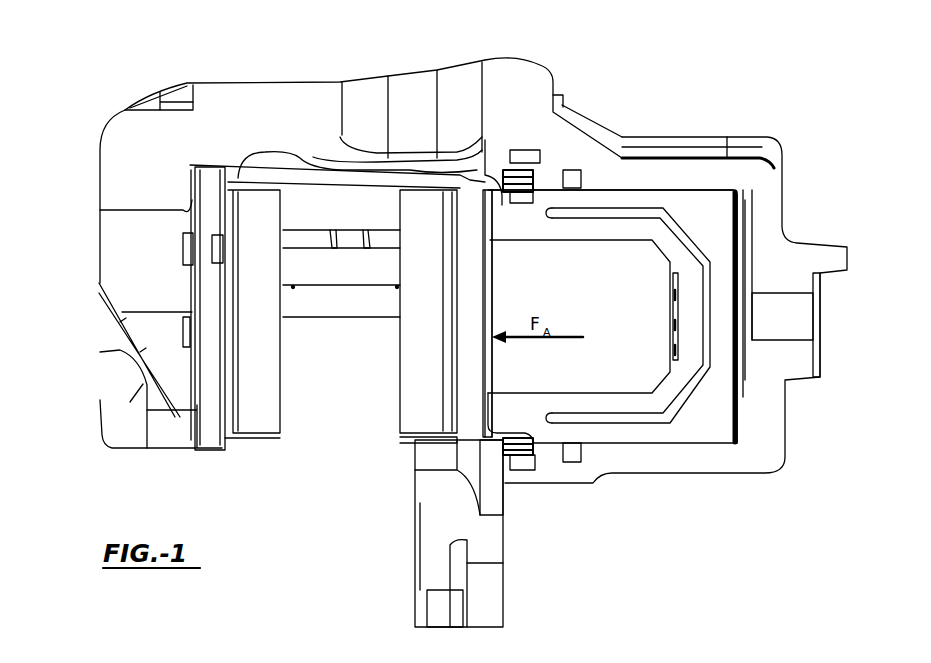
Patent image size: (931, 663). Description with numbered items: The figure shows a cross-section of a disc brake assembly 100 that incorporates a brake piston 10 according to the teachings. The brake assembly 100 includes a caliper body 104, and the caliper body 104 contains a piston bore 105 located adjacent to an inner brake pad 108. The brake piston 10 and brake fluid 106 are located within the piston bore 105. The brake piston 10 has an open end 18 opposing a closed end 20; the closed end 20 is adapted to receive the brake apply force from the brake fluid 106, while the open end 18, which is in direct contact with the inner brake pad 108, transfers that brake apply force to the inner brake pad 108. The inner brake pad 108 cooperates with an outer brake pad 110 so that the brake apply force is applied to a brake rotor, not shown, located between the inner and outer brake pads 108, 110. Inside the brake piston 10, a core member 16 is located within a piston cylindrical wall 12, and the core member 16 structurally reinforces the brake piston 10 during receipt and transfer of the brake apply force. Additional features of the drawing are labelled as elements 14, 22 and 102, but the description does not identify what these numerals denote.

The brake piston 10 is at (688, 436).
The piston cylindrical wall 12 is at (643, 433).
The piston 14 is at (597, 353).
The core member 16 is at (697, 377).
The open end 18 is at (478, 225).
The closed end 20 is at (723, 322).
The caliper bracket 22 is at (371, 551).
The brake assembly 100 is at (98, 113).
The mounting bracket 102 is at (664, 134).
The caliper body 104 is at (755, 180).
The piston bore 105 is at (692, 192).
The brake fluid 106 is at (728, 270).
The inner brake pad 108 is at (413, 413).
The outer brake pad 110 is at (257, 423).